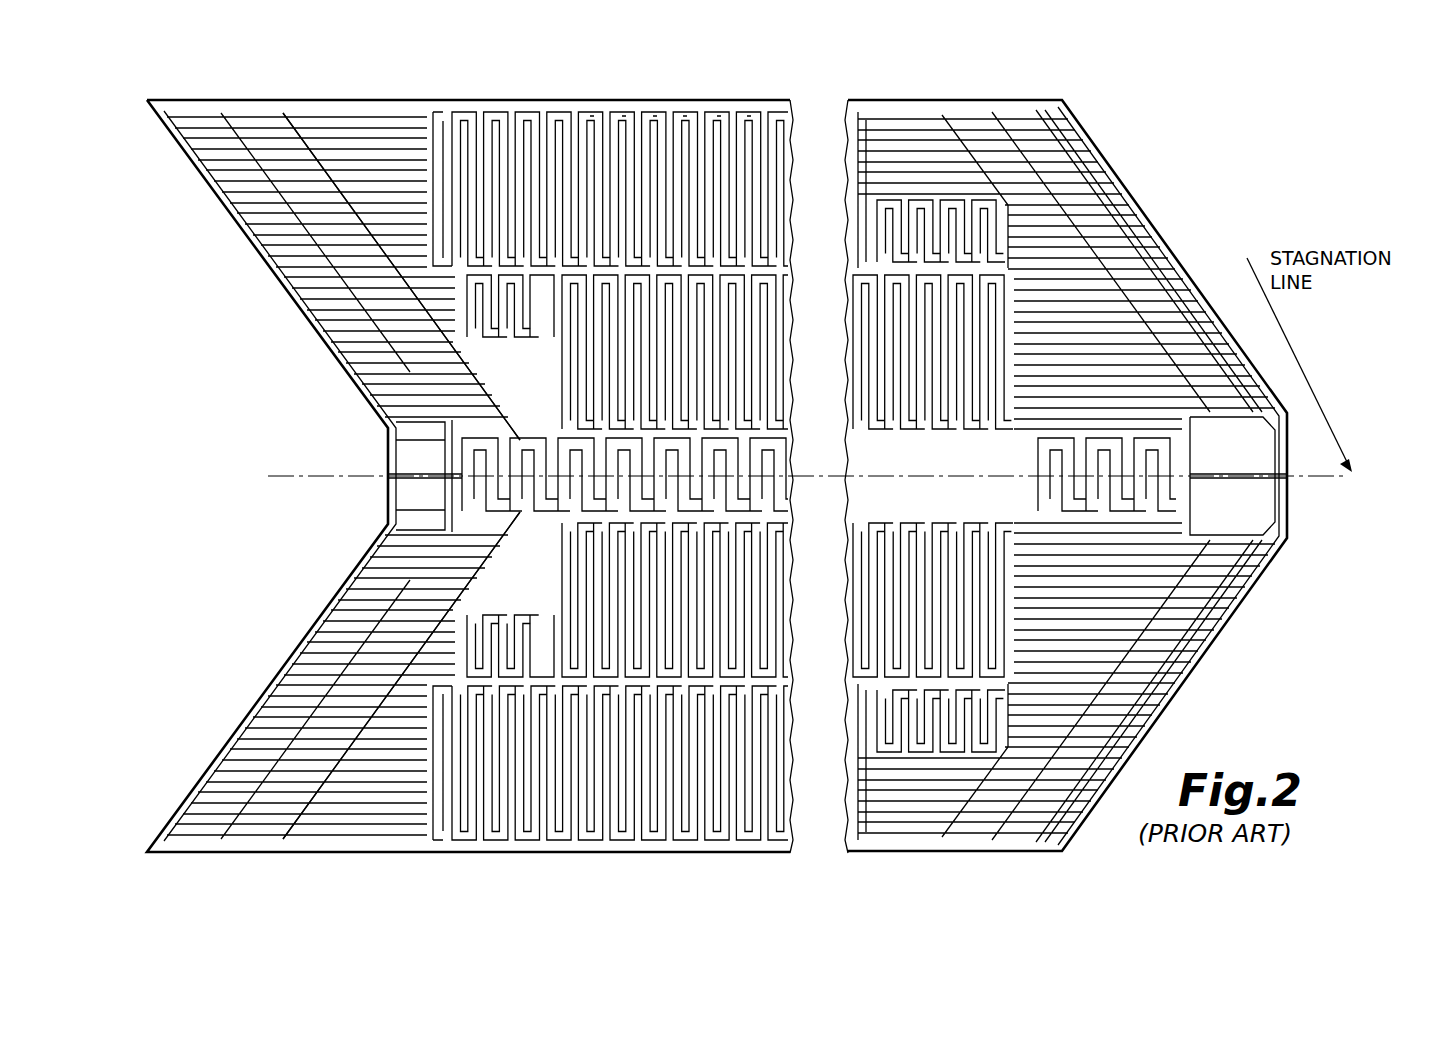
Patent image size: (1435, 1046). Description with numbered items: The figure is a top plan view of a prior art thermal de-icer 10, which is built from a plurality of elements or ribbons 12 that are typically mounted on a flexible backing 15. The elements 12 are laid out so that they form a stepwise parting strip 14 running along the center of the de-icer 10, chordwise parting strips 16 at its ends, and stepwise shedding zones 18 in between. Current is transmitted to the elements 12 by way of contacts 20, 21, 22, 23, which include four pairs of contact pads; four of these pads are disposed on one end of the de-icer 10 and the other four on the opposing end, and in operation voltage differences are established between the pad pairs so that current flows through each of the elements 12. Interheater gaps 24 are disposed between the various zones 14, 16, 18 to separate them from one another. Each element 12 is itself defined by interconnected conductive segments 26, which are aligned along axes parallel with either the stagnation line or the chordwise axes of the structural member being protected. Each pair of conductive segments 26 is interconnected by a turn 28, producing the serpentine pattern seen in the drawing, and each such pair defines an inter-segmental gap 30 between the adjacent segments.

The thermal de-icer 10 is at (474, 80).
The elements or ribbons 12 is at (778, 108).
The stepwise parting strip 14 is at (793, 438).
The flexible backing 15 is at (592, 846).
The chordwise parting strips 16 is at (285, 860).
The stepwise shedding zones 18 is at (793, 275).
The contact 20 is at (423, 288).
The contact 21 is at (412, 458).
The contact 22 is at (410, 497).
The contact 23 is at (423, 668).
The interheater gaps 24 is at (278, 112).
The conductive segments 26 is at (548, 153).
The turn 28 is at (653, 113).
The inter-segmental gap 30 is at (747, 115).